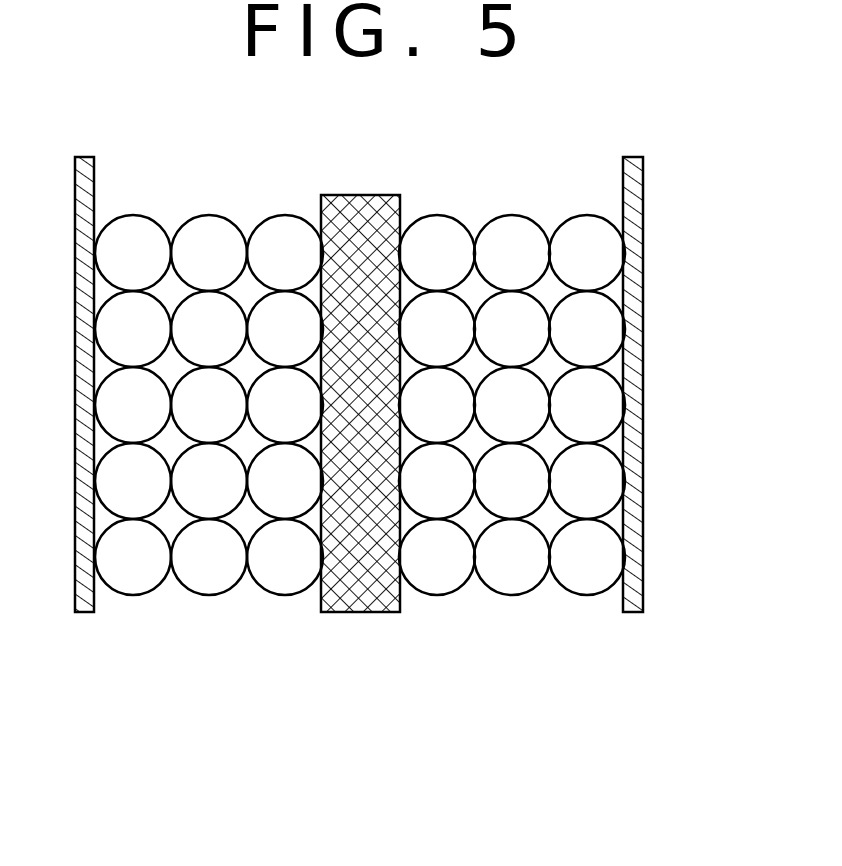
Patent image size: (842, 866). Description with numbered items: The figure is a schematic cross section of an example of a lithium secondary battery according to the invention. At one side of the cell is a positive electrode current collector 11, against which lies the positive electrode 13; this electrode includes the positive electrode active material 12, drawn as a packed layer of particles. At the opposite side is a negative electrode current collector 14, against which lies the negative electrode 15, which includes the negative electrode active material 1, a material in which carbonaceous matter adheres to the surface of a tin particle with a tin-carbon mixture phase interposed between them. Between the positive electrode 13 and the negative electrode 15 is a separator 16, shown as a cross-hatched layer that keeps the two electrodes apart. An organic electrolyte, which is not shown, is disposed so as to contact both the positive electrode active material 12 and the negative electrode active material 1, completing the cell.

The negative electrode active material 1 is at (509, 231).
The positive electrode current collector 11 is at (85, 157).
The positive electrode active material 12 is at (205, 231).
The positive electrode 13 is at (208, 390).
The negative electrode current collector 14 is at (632, 157).
The negative electrode 15 is at (512, 390).
The separator 16 is at (398, 632).